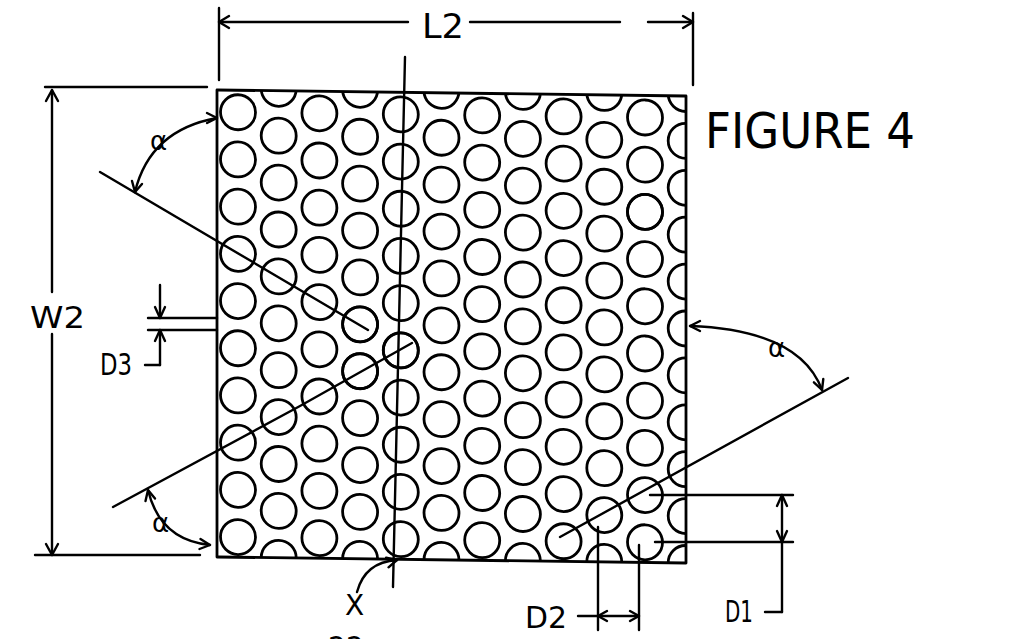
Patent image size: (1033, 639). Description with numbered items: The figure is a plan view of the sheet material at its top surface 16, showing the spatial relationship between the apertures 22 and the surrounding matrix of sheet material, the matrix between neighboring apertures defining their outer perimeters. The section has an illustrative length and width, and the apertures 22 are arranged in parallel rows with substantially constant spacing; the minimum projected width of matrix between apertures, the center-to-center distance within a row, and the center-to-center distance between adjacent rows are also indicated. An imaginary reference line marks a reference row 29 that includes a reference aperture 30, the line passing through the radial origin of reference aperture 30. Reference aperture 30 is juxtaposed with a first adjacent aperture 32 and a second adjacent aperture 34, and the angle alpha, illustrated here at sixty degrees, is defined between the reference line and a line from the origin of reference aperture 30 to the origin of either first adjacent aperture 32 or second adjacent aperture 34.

The top surface 16 is at (672, 310).
The apertures 22 is at (645, 213).
The reference row 29 is at (400, 562).
The reference aperture 30 is at (415, 347).
The first adjacent aperture 32 is at (360, 373).
The second adjacent aperture 34 is at (368, 333).